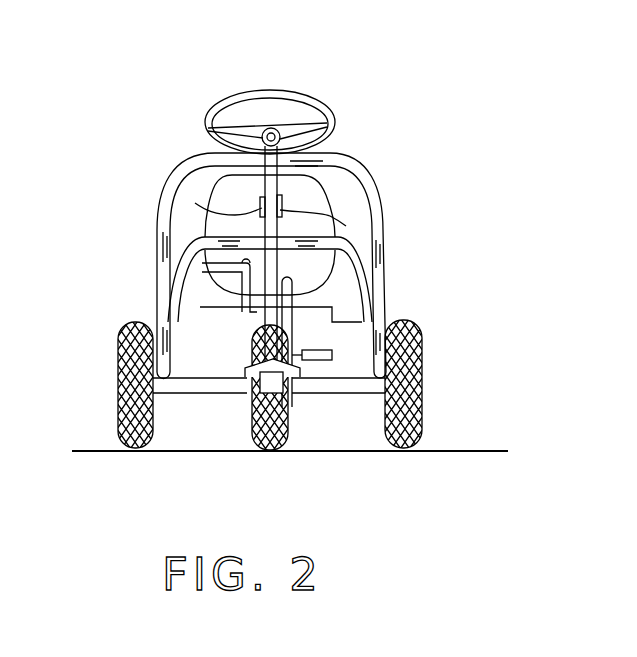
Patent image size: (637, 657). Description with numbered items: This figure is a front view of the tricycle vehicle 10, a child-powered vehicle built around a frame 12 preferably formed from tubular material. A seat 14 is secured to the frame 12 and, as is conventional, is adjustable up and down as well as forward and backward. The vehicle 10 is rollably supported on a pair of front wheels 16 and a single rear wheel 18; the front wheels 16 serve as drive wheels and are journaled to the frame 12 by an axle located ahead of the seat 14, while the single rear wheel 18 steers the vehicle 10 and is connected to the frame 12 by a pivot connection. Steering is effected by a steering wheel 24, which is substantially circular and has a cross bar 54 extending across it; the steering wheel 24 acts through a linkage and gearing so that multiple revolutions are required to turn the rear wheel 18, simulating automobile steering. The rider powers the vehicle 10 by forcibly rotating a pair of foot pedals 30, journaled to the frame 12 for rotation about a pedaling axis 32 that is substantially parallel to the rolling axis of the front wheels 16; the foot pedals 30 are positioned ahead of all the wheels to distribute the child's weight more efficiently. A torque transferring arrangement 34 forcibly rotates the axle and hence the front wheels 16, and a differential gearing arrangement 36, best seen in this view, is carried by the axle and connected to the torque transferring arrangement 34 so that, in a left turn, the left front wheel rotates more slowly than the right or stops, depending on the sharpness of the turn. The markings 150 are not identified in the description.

The tricycle vehicle 10 is at (383, 110).
The frame 12 is at (375, 211).
The seat 14 is at (363, 190).
The front wheels 16 is at (118, 406).
The rear wheel 18 is at (286, 423).
The steering wheel 24 is at (272, 90).
The foot pedals 30 is at (170, 290).
The pedaling axis 32 is at (338, 350).
The torque transferring arrangement 34 is at (275, 308).
The differential gearing arrangement 36 is at (256, 395).
The cross bar 54 is at (266, 122).
The clamps 150 is at (195, 203).